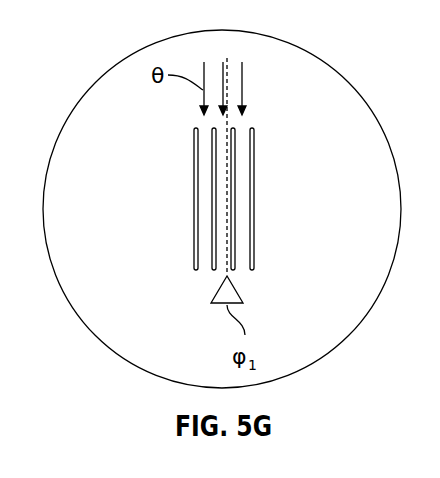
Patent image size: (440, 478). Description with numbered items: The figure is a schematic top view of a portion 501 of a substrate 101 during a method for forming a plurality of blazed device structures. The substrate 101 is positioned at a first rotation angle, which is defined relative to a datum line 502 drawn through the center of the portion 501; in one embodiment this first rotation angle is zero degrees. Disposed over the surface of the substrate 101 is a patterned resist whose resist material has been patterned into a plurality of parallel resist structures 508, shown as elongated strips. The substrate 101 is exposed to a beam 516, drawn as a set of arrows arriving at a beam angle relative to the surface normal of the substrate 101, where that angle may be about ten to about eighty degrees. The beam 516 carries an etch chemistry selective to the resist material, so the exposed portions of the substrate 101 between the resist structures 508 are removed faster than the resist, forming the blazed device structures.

The substrate 101 is at (105, 345).
The beam 516 is at (242, 88).
The datum line 502 is at (264, 186).
The resist structures 508 is at (254, 200).
The portion of the substrate 501 is at (266, 286).